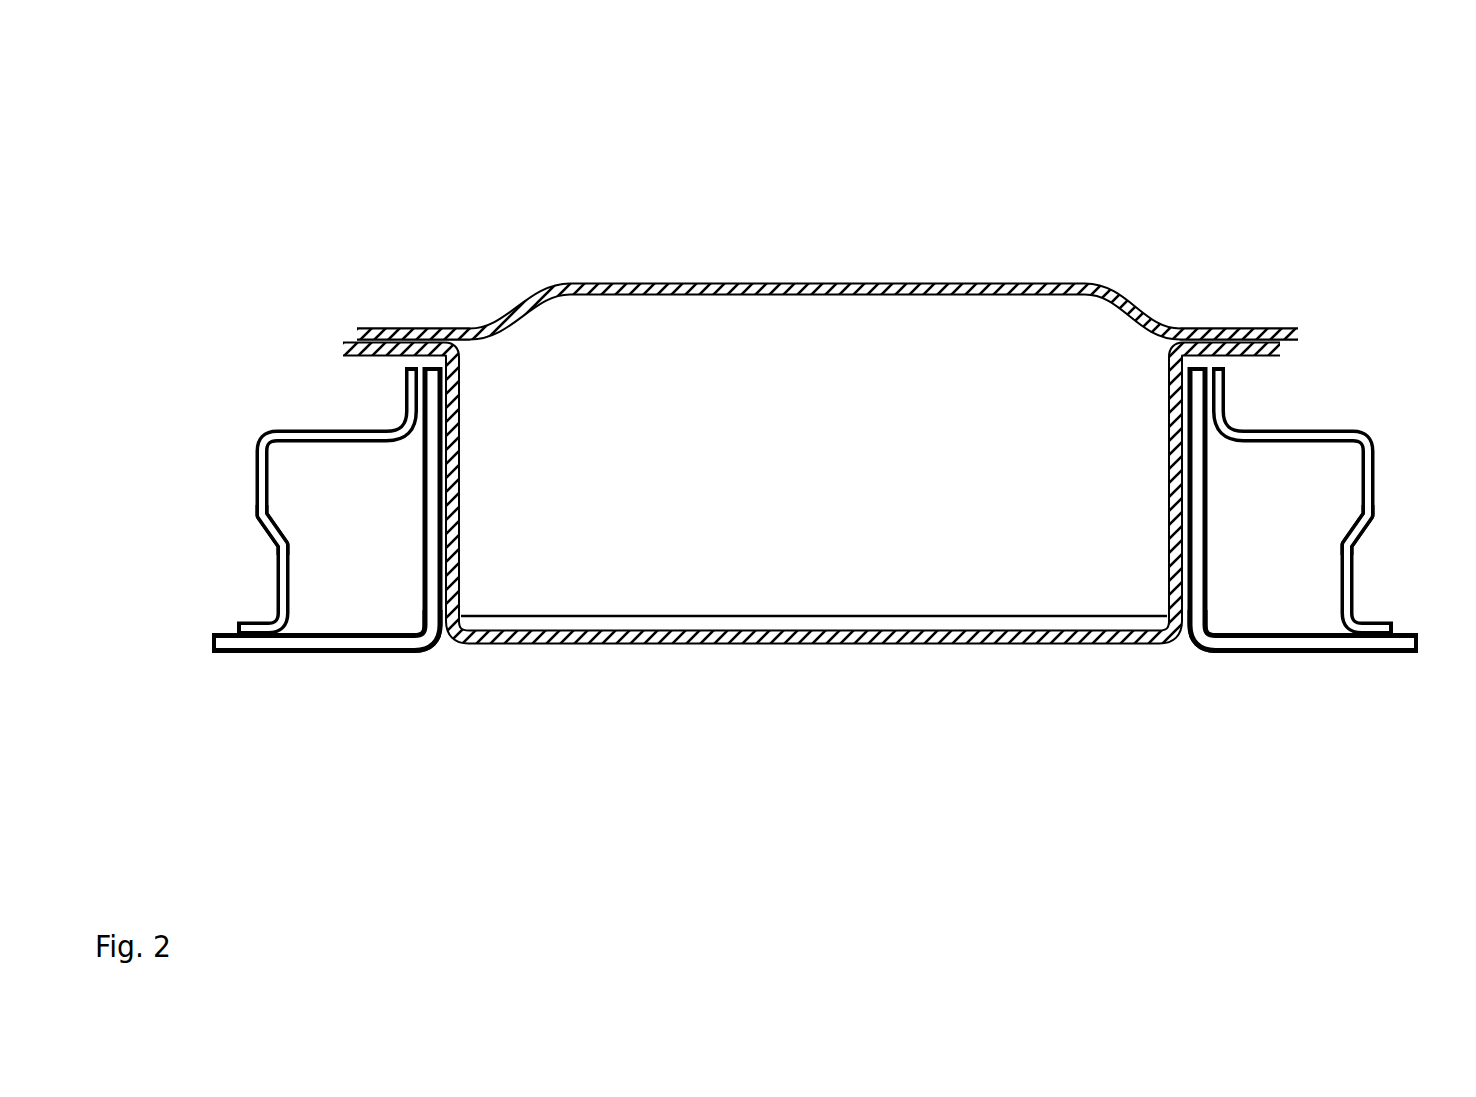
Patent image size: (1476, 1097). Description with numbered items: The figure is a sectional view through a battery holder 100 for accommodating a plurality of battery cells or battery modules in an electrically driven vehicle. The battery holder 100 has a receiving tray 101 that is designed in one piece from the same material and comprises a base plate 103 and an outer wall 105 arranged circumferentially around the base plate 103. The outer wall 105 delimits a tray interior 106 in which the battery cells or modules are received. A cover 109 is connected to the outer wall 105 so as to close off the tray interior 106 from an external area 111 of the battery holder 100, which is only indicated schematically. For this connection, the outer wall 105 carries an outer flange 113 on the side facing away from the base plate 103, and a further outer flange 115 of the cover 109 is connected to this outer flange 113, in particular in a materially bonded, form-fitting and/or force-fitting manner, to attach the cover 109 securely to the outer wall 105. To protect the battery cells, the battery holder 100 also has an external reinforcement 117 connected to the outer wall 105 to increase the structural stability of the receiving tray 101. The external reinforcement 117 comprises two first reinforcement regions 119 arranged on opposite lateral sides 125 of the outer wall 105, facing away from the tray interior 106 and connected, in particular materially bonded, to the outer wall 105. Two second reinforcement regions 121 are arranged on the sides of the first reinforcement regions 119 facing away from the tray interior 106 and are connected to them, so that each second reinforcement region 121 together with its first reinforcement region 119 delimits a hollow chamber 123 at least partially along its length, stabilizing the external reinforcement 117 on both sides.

The battery holder 100 is at (254, 136).
The receiving tray 101 is at (772, 529).
The base plate 103 is at (903, 640).
The outer wall 105 is at (814, 489).
The tray interior 106 is at (925, 432).
The cover 109 is at (827, 250).
The external area 111 is at (1222, 158).
The outer flange 113 is at (356, 346).
The further outer flange 115 is at (400, 330).
The external reinforcement 117 is at (815, 589).
The first reinforcement region 119 is at (817, 599).
The second reinforcement region 121 is at (817, 494).
The hollow chamber 123 is at (310, 520).
The lateral sides 125 is at (456, 433).